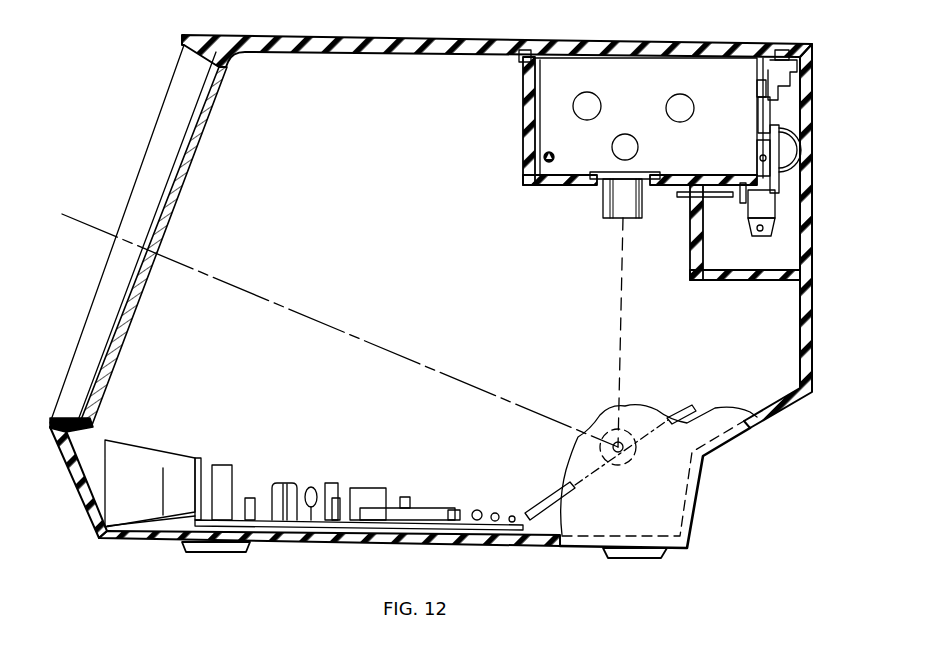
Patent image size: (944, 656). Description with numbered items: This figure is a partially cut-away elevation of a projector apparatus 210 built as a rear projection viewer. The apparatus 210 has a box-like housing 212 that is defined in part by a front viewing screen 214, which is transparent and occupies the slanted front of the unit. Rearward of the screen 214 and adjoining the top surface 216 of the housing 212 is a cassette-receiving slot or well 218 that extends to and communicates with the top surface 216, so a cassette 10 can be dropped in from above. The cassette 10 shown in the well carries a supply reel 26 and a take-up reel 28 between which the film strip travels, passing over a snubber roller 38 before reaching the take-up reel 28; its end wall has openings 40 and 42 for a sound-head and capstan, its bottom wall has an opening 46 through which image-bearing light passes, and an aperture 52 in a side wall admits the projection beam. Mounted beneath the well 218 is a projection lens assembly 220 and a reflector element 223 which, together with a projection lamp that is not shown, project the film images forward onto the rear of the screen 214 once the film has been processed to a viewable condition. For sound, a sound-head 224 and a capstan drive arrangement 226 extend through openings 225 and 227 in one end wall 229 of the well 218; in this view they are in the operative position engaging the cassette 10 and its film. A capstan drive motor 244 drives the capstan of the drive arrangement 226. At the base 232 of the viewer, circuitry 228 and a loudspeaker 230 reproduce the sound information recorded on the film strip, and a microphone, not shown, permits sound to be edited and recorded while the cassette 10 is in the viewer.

The cassette 10 is at (628, 97).
The supply spool or reel 26 is at (680, 97).
The take-up spool or reel 28 is at (588, 99).
The snubber roller 38 is at (551, 153).
The opening 40 is at (757, 112).
The opening 42 is at (756, 156).
The opening 46 is at (600, 183).
The aperture 52 is at (631, 137).
The projector apparatus 210 is at (431, 280).
The box-like housing 212 is at (391, 248).
The front viewing screen 214 is at (175, 185).
The top surface 216 is at (331, 30).
The cassette-receiving slot or well 218 is at (535, 66).
The projection lens assembly 220 is at (643, 214).
The reflector element 223 is at (683, 404).
The sound-head 224 is at (759, 120).
The opening 225 is at (766, 105).
The capstan drive arrangement 226 is at (795, 145).
The opening 227 is at (746, 184).
The circuitry 228 is at (316, 474).
The end wall 229 is at (780, 59).
The loudspeaker 230 is at (147, 463).
The base 232 is at (340, 545).
The capstan drive motor 244 is at (744, 215).